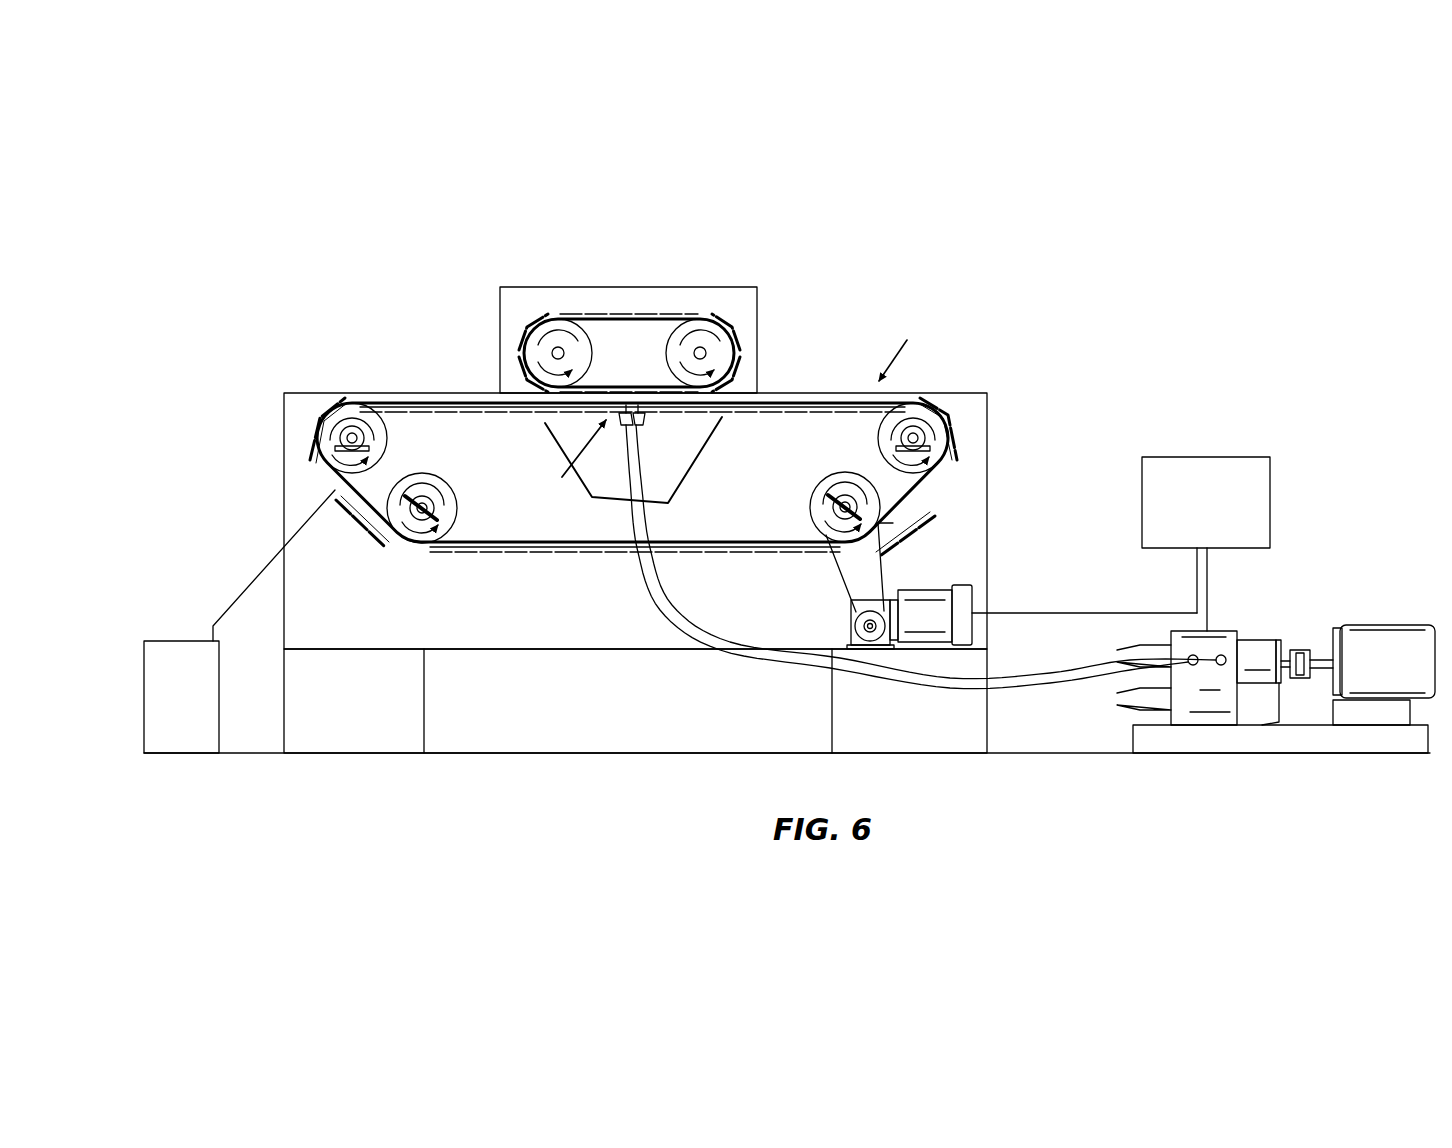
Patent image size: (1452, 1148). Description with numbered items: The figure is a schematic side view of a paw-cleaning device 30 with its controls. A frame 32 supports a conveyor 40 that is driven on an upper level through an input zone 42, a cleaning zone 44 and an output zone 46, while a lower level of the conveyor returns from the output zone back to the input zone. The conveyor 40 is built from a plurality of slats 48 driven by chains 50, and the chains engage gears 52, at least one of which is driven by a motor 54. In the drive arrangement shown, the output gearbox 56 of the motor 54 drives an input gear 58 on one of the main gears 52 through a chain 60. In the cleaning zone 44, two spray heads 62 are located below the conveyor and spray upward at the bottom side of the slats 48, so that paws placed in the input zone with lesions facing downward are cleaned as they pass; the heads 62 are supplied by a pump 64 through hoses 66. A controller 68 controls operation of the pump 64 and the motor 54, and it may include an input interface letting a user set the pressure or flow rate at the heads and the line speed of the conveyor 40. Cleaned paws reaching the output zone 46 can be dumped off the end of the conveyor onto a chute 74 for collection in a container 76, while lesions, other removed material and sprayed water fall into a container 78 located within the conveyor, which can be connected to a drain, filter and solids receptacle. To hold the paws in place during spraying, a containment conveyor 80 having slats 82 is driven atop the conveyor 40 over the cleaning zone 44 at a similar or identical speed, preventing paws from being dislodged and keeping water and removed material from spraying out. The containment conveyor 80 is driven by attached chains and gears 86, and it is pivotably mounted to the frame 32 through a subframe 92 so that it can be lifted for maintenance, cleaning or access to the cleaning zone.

The device 30 is at (857, 233).
The frame 32 is at (1056, 390).
The conveyor 40 is at (790, 393).
The input zone 42 is at (904, 344).
The cleaning zone 44 is at (568, 453).
The output zone 46 is at (418, 390).
The slats 48 is at (540, 555).
The chains 50 is at (750, 545).
The gears 52 is at (412, 478).
The motor 54 is at (940, 585).
The output gearbox 56 is at (852, 623).
The input gear 58 is at (895, 524).
The chain 60 is at (835, 580).
The spray heads 62 is at (645, 421).
The pump 64 is at (1230, 632).
The hoses 66 is at (1050, 688).
The controller 68 is at (1196, 458).
The chute 74 is at (310, 530).
The container 76 is at (221, 668).
The container 78 is at (697, 463).
The containment conveyor 80 is at (668, 222).
The slats 82 is at (600, 312).
The gears 86 is at (548, 316).
The subframe 92 is at (760, 311).